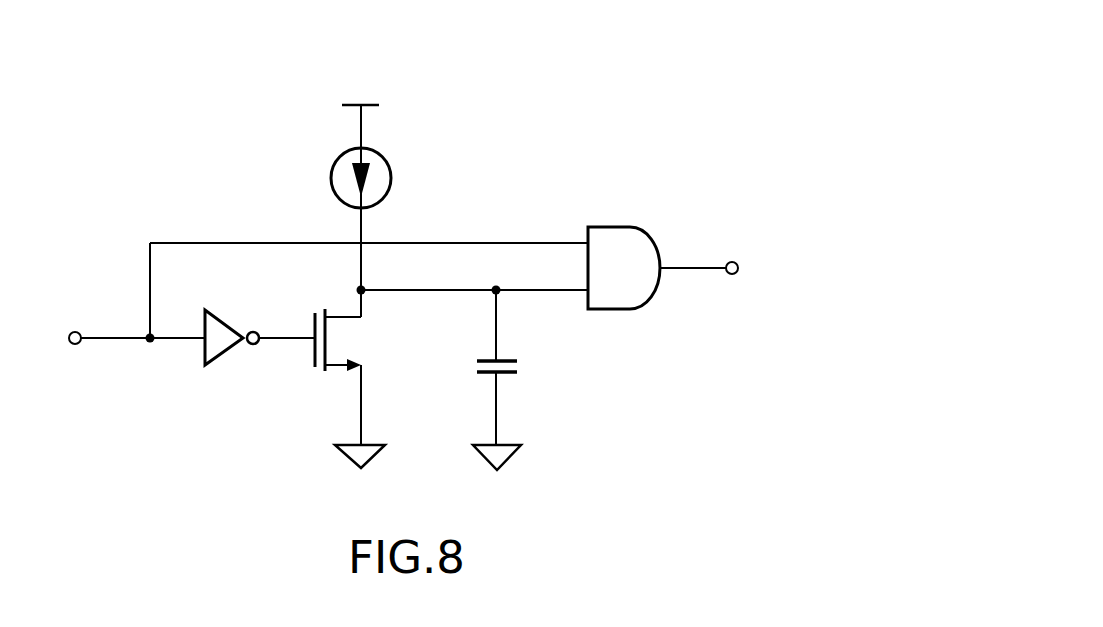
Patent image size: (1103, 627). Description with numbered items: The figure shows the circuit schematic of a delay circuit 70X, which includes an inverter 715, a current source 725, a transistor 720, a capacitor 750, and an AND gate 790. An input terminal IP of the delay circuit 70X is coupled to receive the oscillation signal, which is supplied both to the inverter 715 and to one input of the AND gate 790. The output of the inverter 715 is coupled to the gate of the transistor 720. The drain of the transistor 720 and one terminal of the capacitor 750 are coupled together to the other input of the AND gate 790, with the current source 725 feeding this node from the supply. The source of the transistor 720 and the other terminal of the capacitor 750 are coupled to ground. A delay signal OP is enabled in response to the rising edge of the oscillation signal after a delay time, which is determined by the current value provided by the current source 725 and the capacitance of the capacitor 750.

The delay circuit 70X is at (432, 240).
The inverter 715 is at (223, 320).
The transistor 720 is at (348, 340).
The current source 725 is at (394, 168).
The capacitor 750 is at (517, 366).
The AND gate 790 is at (607, 223).